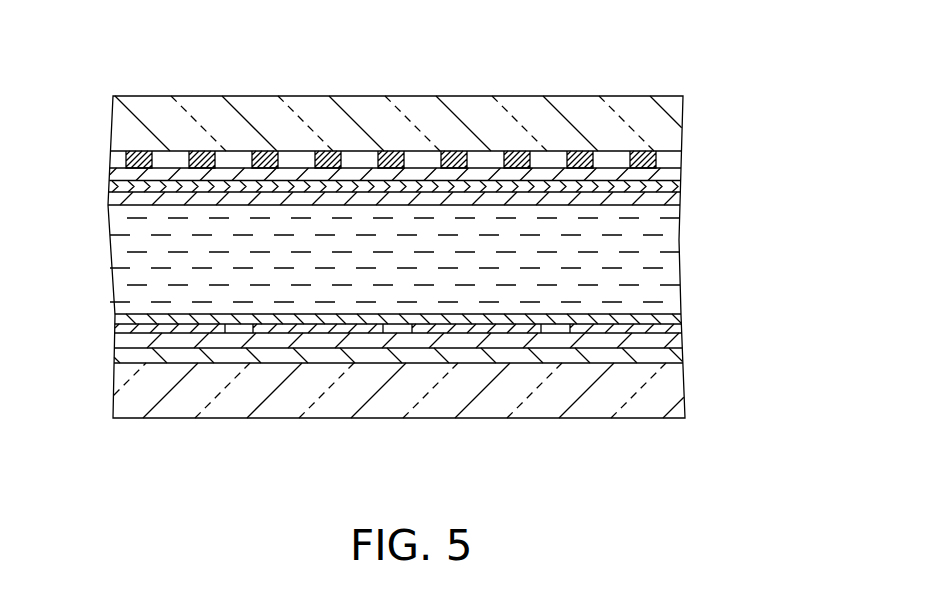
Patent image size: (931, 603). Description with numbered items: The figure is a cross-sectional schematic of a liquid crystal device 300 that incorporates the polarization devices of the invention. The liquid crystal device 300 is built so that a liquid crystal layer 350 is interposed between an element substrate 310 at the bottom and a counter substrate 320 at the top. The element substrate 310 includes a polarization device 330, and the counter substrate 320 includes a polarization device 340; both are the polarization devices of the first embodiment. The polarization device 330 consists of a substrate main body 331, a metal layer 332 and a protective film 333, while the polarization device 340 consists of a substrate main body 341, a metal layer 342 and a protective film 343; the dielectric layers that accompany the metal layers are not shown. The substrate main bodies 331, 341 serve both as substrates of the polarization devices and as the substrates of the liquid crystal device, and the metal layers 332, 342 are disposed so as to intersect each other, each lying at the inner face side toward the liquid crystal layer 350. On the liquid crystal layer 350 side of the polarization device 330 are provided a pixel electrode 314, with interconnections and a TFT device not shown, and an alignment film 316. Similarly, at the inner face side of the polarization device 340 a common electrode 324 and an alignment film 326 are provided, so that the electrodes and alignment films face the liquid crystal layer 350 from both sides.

The liquid crystal device 300 is at (655, 40).
The element substrate 310 is at (99, 317).
The pixel electrode 314 is at (480, 438).
The alignment film 316 is at (683, 321).
The counter substrate 320 is at (99, 100).
The common electrode 324 is at (673, 188).
The alignment film 326 is at (673, 200).
The polarization device 330 is at (765, 330).
The substrate main body 331 is at (683, 388).
The metal layer 332 is at (683, 355).
The protective film 333 is at (680, 340).
The polarization device 340 is at (765, 105).
The substrate main body 341 is at (673, 115).
The metal layer 342 is at (660, 162).
The protective film 343 is at (673, 175).
The liquid crystal layer 350 is at (675, 262).